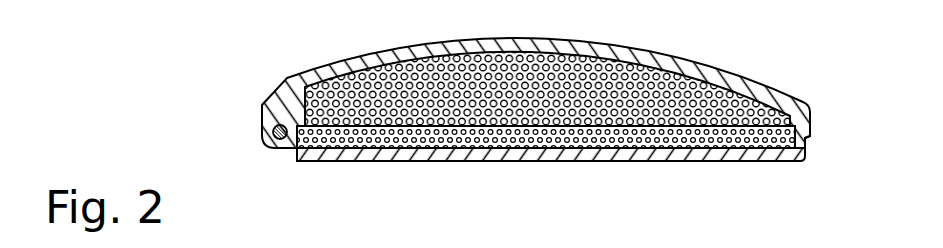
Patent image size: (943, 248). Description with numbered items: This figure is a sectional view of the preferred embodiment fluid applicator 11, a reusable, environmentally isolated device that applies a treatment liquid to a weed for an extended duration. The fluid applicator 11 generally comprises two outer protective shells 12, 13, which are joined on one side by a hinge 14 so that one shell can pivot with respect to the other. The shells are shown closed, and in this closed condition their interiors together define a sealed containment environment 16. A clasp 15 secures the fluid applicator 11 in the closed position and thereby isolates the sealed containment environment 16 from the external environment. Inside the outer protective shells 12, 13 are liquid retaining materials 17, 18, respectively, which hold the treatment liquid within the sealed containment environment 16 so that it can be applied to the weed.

The fluid applicator 11 is at (272, 34).
The outer protective shell 12 is at (728, 70).
The outer protective shell 13 is at (687, 157).
The hinge 14 is at (263, 140).
The clasp 15 is at (813, 135).
The sealed containment environment 16 is at (611, 49).
The liquid retaining material 17 is at (672, 68).
The liquid retaining material 18 is at (557, 150).